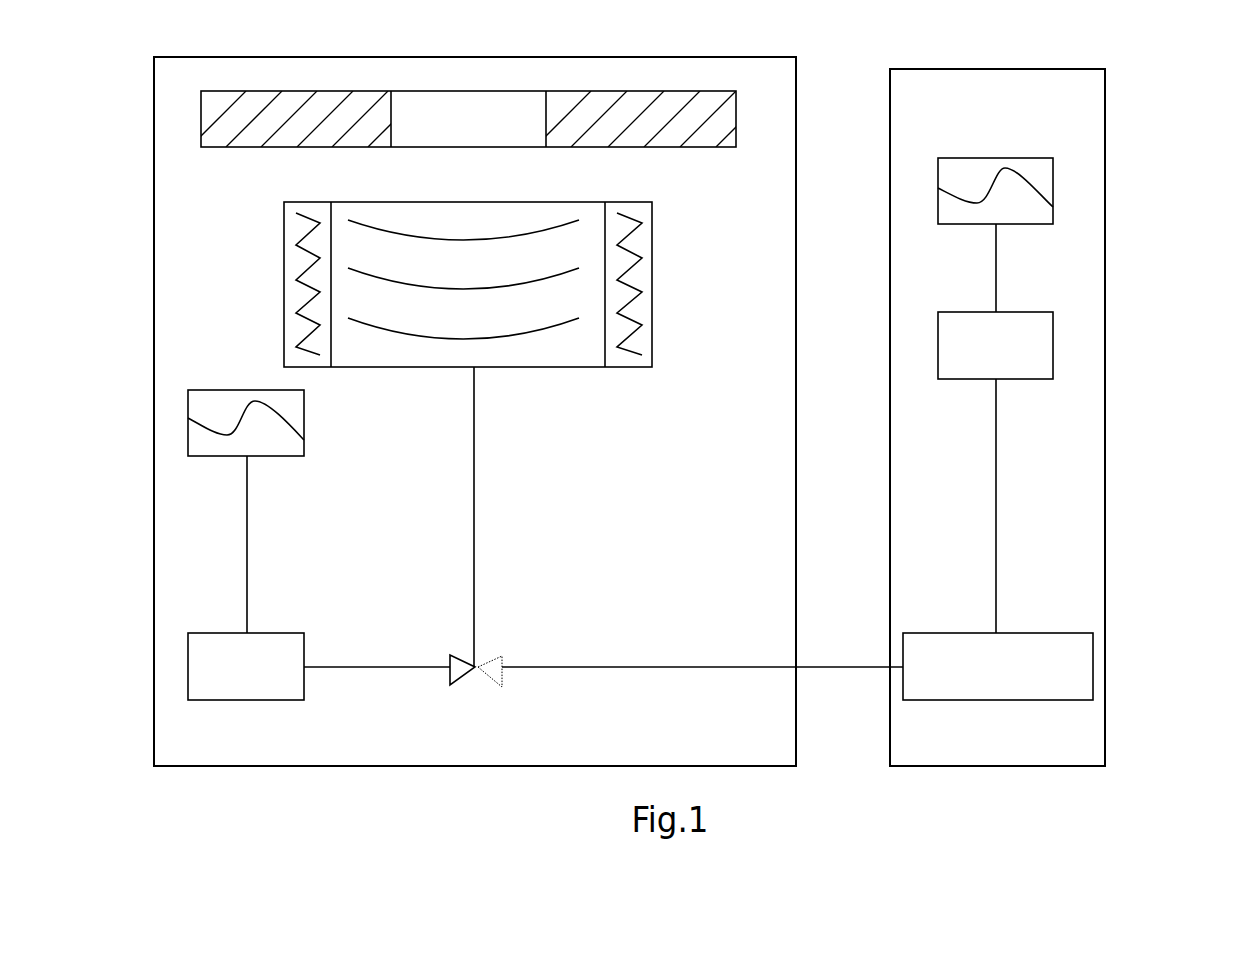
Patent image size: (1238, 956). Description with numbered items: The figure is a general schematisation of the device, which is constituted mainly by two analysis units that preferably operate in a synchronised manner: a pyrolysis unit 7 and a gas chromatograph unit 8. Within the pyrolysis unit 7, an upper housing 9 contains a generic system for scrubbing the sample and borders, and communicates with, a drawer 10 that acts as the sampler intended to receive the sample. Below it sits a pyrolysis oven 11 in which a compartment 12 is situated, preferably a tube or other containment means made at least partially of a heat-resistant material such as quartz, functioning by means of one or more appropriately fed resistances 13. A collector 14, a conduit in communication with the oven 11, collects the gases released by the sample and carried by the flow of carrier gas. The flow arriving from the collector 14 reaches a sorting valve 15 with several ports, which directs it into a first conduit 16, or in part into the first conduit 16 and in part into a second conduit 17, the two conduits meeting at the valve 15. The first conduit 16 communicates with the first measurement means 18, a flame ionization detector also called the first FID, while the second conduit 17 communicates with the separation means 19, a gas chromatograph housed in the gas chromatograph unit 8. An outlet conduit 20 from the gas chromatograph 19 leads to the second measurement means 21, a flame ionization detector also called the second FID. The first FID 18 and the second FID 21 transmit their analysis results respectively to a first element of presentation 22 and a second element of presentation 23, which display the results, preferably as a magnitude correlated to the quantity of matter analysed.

The pyrolysis unit 7 is at (807, 113).
The gas chromatograph unit 8 is at (1117, 123).
The upper housing 9 is at (283, 113).
The drawer 10 is at (415, 135).
The pyrolysis oven 11 is at (665, 356).
The compartment 12 is at (438, 345).
The resistances 13 is at (307, 290).
The collector 14 is at (474, 490).
The sorting valve 15 is at (493, 660).
The first conduit 16 is at (403, 677).
The second conduit 17 is at (640, 655).
The first measurement means 18 is at (273, 633).
The gas chromatograph 19 is at (997, 712).
The outlet conduit 20 is at (985, 433).
The second measurement means 21 is at (949, 312).
The first element of presentation 22 is at (224, 390).
The second element of presentation 23 is at (997, 157).